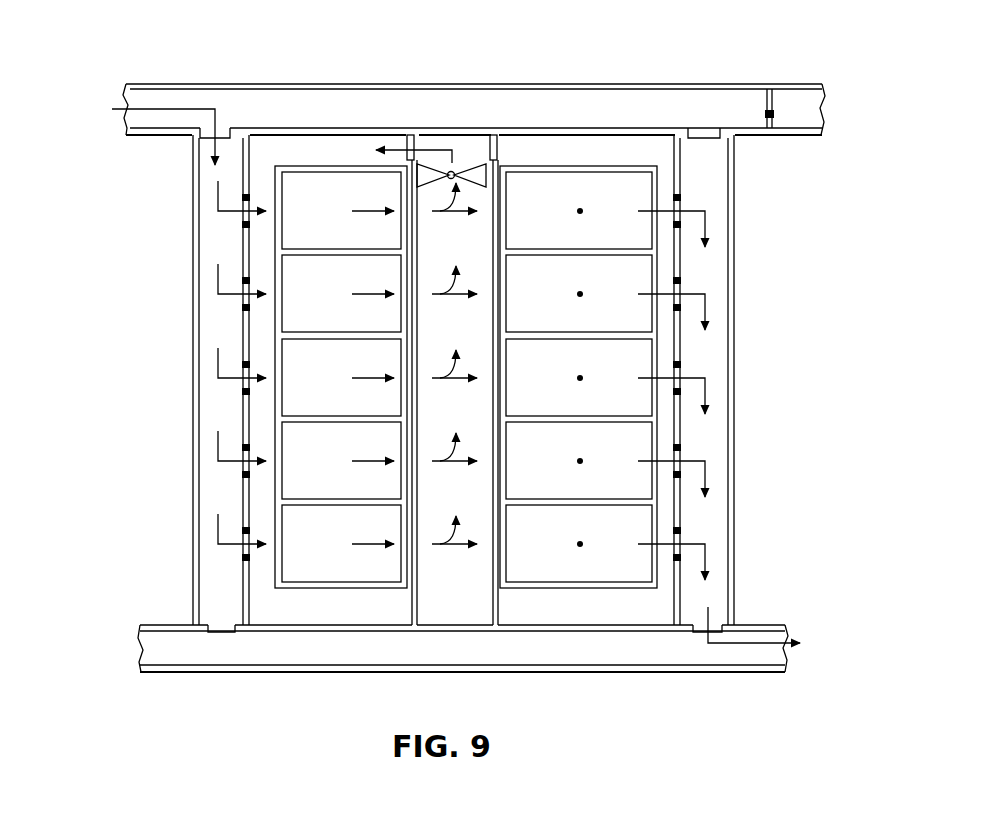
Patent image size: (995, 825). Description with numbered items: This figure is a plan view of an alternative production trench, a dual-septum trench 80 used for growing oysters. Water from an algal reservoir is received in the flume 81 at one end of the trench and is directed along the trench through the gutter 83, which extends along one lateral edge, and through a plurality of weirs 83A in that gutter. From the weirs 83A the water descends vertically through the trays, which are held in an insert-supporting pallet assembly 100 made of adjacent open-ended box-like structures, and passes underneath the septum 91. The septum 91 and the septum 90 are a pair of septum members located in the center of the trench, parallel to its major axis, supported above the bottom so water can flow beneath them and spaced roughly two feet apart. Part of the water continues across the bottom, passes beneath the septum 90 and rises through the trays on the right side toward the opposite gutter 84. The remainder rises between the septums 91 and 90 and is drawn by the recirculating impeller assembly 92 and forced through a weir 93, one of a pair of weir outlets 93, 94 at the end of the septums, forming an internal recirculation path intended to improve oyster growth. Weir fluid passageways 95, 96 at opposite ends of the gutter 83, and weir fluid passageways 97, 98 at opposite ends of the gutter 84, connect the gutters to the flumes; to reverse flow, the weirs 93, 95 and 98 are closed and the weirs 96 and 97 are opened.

The dual-septum trench 80 is at (638, 66).
The flume 81 is at (296, 113).
The gutter 83 is at (210, 322).
The weirs 83A is at (242, 222).
The gutter 84 is at (732, 352).
The septum member 90 is at (507, 405).
The septum member 91 is at (415, 356).
The recirculating impeller assembly 92 is at (462, 160).
The weir outlet 93 is at (400, 138).
The weir outlet 94 is at (502, 148).
The weir fluid passageway 95 is at (222, 130).
The weir fluid passageway 96 is at (228, 632).
The weir fluid passageway 97 is at (706, 126).
The weir fluid passageway 98 is at (718, 618).
The insert-supporting pallet assembly 100 is at (330, 597).